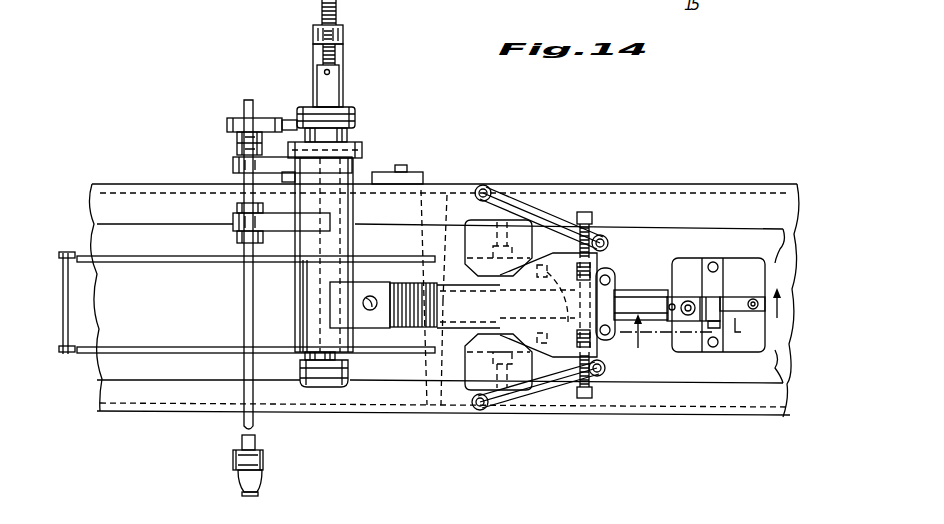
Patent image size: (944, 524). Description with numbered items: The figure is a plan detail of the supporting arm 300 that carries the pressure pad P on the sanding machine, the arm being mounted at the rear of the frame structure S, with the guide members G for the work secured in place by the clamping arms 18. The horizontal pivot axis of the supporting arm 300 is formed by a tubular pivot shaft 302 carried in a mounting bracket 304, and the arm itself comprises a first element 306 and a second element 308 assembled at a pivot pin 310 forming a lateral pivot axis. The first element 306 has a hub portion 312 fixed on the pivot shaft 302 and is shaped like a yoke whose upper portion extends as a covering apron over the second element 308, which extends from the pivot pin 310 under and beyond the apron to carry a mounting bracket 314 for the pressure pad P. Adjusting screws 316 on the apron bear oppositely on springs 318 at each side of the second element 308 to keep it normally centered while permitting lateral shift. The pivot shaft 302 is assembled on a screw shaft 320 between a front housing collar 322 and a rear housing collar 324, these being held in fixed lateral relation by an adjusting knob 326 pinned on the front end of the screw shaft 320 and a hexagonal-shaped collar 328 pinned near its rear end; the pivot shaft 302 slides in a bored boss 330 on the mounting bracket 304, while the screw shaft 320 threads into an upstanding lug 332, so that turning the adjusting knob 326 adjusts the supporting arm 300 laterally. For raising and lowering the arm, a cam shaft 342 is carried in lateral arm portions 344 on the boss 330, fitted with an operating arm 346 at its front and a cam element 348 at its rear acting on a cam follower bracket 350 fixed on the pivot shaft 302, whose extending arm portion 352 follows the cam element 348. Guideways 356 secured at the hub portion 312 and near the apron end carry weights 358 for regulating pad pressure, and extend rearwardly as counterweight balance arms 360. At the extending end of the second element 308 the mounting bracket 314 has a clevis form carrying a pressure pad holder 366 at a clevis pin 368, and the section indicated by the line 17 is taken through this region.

The frame structure S is at (134, 187).
The guide members G is at (698, 232).
The pressure pad P is at (738, 260).
The section line 17- 17 is at (707, 325).
The clamping arms 18 is at (532, 202).
The supporting arm 300 is at (413, 335).
The tubular pivot shaft 302 is at (355, 245).
The mounting bracket 304 is at (313, 57).
The first element 306 is at (442, 334).
The second element 308 is at (445, 224).
The pivot pin 310 is at (370, 297).
The hub portion 312 is at (295, 296).
The mounting bracket 314 is at (637, 286).
The adjusting screws 316 is at (583, 212).
The springs 318 is at (557, 305).
The screw shaft 320 is at (338, 55).
The front housing collar 322 is at (305, 360).
The rear housing collar 324 is at (357, 115).
The adjusting knob 326 is at (332, 388).
The hexagonal-shaped collar 328 is at (340, 80).
The bored boss 330 is at (364, 150).
The upstanding lug 332 is at (345, 33).
The cam shaft 342 is at (244, 305).
The lateral arm portions 344 is at (233, 166).
The operating arm 346 is at (236, 488).
The cam element 348 is at (226, 118).
The cam follower bracket 350 is at (349, 134).
The extending arm portion 352 is at (282, 120).
The guideways 356 is at (420, 249).
The weights 358 is at (492, 218).
The counterweight balance arms 360 is at (148, 257).
The pressure pad holder 366 is at (735, 286).
The clevis pin 368 is at (707, 332).